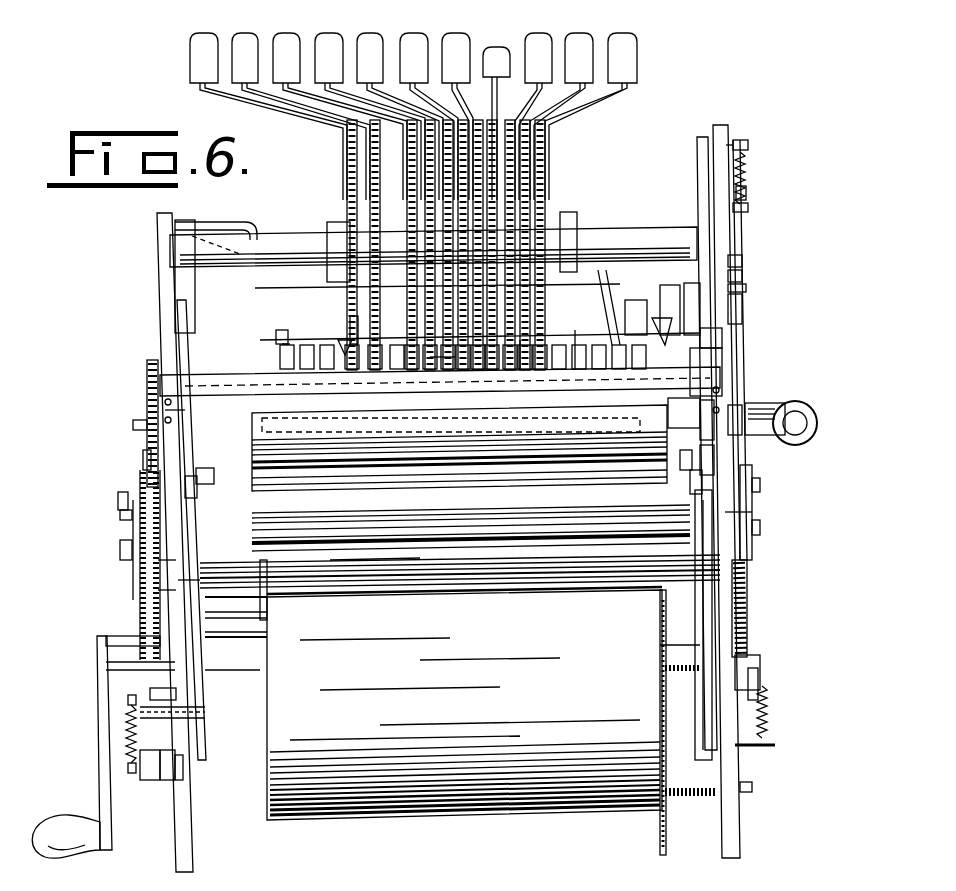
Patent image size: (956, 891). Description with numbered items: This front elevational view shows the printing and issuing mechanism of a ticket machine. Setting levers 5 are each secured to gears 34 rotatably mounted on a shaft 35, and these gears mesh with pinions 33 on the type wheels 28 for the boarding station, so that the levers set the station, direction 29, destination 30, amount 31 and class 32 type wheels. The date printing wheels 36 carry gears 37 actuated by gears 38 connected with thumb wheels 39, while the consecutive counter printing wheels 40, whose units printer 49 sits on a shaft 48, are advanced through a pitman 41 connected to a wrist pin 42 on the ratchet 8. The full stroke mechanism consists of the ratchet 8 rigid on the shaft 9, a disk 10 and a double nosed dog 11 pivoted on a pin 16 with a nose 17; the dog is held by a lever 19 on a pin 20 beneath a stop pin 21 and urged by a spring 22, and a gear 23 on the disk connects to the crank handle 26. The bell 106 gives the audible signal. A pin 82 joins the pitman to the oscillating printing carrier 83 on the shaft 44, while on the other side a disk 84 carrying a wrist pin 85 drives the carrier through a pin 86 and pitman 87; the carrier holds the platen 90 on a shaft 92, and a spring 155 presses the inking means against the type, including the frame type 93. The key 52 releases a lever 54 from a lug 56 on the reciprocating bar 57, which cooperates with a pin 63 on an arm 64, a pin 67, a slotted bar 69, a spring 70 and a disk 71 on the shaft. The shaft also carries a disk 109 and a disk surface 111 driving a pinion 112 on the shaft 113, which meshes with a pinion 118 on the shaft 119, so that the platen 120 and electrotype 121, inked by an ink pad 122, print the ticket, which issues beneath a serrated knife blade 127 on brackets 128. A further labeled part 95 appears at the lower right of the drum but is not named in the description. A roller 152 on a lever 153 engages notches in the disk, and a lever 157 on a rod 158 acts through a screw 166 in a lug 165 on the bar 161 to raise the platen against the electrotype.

The levers 5 is at (542, 60).
The ratchet 8 is at (155, 590).
The shaft 9 is at (650, 580).
The disk 10 is at (150, 610).
The double nosed dog 11 is at (168, 718).
The pin 16 is at (172, 705).
The nose 17 is at (150, 692).
The lever 19 is at (142, 780).
The pin 20 is at (165, 785).
The stop pin 21 is at (183, 770).
The spring 22 is at (128, 735).
The gear 23 is at (160, 560).
The crank handle 26 is at (105, 765).
The type wheels 28 is at (555, 300).
The type wheels 29 is at (525, 300).
The type wheels 30 is at (470, 330).
The type wheels 31 is at (440, 355).
The type wheels 32 is at (352, 318).
The pinions 33 is at (540, 340).
The gears 34 is at (407, 157).
The shaft 35 is at (640, 240).
The date printing wheels 36 is at (585, 330).
The gears 37 is at (632, 305).
The gears 38 is at (600, 270).
The thumb wheels 39 is at (690, 305).
The consecutive counter printing wheels 40 is at (345, 340).
The pitman 41 is at (125, 515).
The wrist pin 42 is at (150, 540).
The shaft 44 is at (660, 640).
The shaft 48 is at (282, 330).
The units printer 49 is at (286, 343).
The key 52 is at (812, 414).
The lever 54 is at (746, 286).
The lug 56 is at (742, 274).
The reciprocating bar 57 is at (742, 300).
The pin 63 is at (748, 145).
The arm 64 is at (700, 165).
The pin 67 is at (748, 208).
The bar 69 is at (745, 175).
The spring 70 is at (746, 192).
The disk 71 is at (748, 590).
The pin 82 is at (120, 500).
The oscillating printing carrier 83 is at (714, 452).
The disk 84 is at (745, 565).
The wrist pin 85 is at (760, 527).
The pin 86 is at (760, 485).
The pitman 87 is at (758, 512).
The platen 90 is at (415, 560).
The shaft 92 is at (270, 580).
The type 93 is at (278, 435).
The ratchet 95 is at (660, 800).
The bell 106 is at (190, 290).
The disk 109 is at (125, 548).
The disk surface 111 is at (160, 520).
The pinion 112 is at (147, 432).
The shaft 113 is at (714, 425).
The pinion 118 is at (160, 378).
The shaft 119 is at (165, 410).
The platen 120 is at (700, 385).
The electrotype 121 is at (398, 418).
The ink pad 122 is at (742, 262).
The serrated knife blade 127 is at (722, 336).
The brackets 128 is at (722, 360).
The roller 152 is at (755, 665).
The lever 153 is at (758, 674).
The spring 155 is at (770, 712).
The lever 157 is at (205, 670).
The rod 158 is at (365, 550).
The bar 161 is at (745, 412).
The lug 165 is at (690, 482).
The screw 166 is at (196, 474).